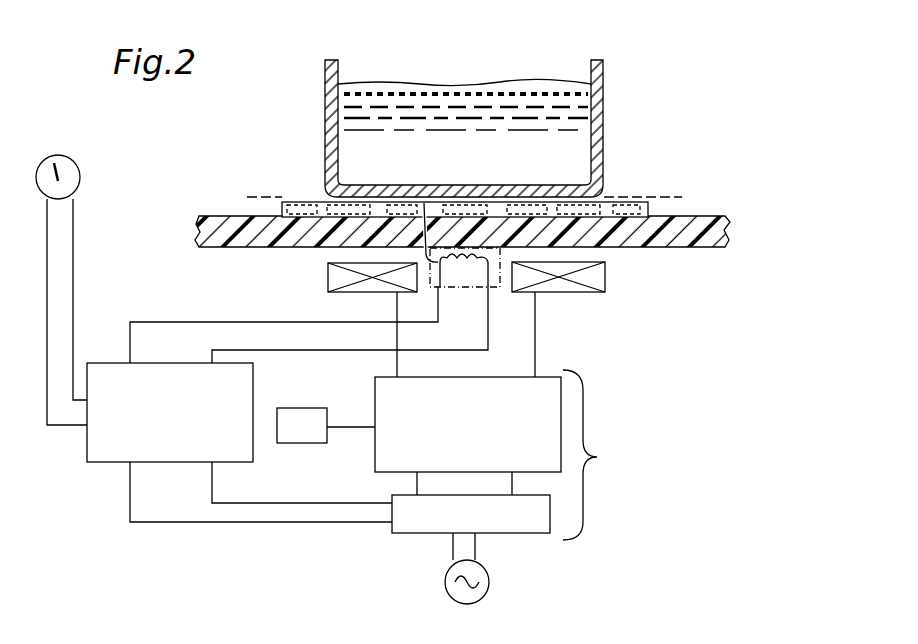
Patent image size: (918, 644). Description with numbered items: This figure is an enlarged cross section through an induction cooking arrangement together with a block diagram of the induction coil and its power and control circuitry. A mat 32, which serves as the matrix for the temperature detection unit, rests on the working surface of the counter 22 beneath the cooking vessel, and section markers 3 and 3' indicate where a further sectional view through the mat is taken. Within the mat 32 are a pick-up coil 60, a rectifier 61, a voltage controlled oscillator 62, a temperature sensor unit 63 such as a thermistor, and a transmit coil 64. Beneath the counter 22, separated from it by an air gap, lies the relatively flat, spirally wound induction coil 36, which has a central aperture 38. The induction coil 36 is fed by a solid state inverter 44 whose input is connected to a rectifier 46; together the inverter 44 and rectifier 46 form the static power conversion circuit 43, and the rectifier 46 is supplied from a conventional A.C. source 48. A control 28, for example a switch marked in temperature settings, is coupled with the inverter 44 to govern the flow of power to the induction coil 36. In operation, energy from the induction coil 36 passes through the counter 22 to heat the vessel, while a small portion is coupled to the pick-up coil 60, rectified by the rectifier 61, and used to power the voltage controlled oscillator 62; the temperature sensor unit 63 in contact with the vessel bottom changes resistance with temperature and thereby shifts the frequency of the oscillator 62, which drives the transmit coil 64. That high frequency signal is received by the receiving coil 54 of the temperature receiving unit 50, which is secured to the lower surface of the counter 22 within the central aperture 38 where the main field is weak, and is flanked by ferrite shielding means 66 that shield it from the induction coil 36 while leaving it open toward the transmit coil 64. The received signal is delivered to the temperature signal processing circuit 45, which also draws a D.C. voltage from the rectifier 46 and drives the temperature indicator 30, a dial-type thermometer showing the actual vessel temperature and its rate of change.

The section line 3 is at (264, 141).
The section line 3' is at (643, 141).
The counter 22 is at (200, 232).
The control 28 is at (297, 416).
The temperature indicator 30 is at (80, 178).
The mat 32 is at (648, 212).
The induction coil 36 is at (600, 279).
The central aperture 38 is at (499, 298).
The static power conversion circuit 43 is at (668, 543).
The solid state inverter 44 is at (397, 473).
The temperature signal processing circuit 45 is at (237, 463).
The rectifier 46 is at (500, 535).
The A.C. source 48 is at (445, 578).
The temperature receiving unit 50 is at (483, 250).
The receiving coil 54 is at (490, 245).
The pick-up coil 60 is at (627, 205).
The rectifier 61 is at (303, 207).
The voltage controlled oscillator 62 is at (408, 217).
The temperature sensor unit 63 is at (347, 210).
The transmit coil 64 is at (581, 205).
The shielding means 66 is at (422, 203).